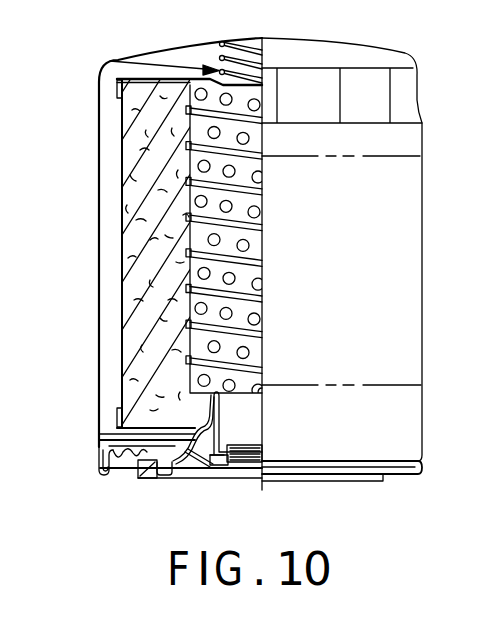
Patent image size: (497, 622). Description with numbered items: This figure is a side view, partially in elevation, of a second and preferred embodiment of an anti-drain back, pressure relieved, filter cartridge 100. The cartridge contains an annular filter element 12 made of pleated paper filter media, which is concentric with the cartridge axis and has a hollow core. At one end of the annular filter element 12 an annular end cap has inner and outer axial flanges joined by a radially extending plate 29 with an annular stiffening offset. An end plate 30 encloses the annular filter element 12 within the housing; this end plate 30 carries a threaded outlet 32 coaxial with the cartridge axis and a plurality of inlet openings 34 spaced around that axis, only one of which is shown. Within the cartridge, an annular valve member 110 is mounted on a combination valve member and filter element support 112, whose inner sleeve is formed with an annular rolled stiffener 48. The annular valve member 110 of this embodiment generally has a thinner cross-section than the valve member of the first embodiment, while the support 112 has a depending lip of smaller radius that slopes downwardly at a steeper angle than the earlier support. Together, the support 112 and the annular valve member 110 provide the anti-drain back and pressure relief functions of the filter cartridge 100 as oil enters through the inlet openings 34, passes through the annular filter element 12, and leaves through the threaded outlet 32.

The filter cartridge 100 is at (80, 116).
The annular filter element 12 is at (135, 250).
The radially extending plate 29 is at (140, 430).
The end plate 30 is at (134, 462).
The inlet openings 34 is at (195, 460).
The annular rolled stiffener 48 is at (232, 465).
The combination valve member and filter element support 112 is at (248, 401).
The annular valve member 110 is at (222, 403).
The threaded outlet 32 is at (232, 449).